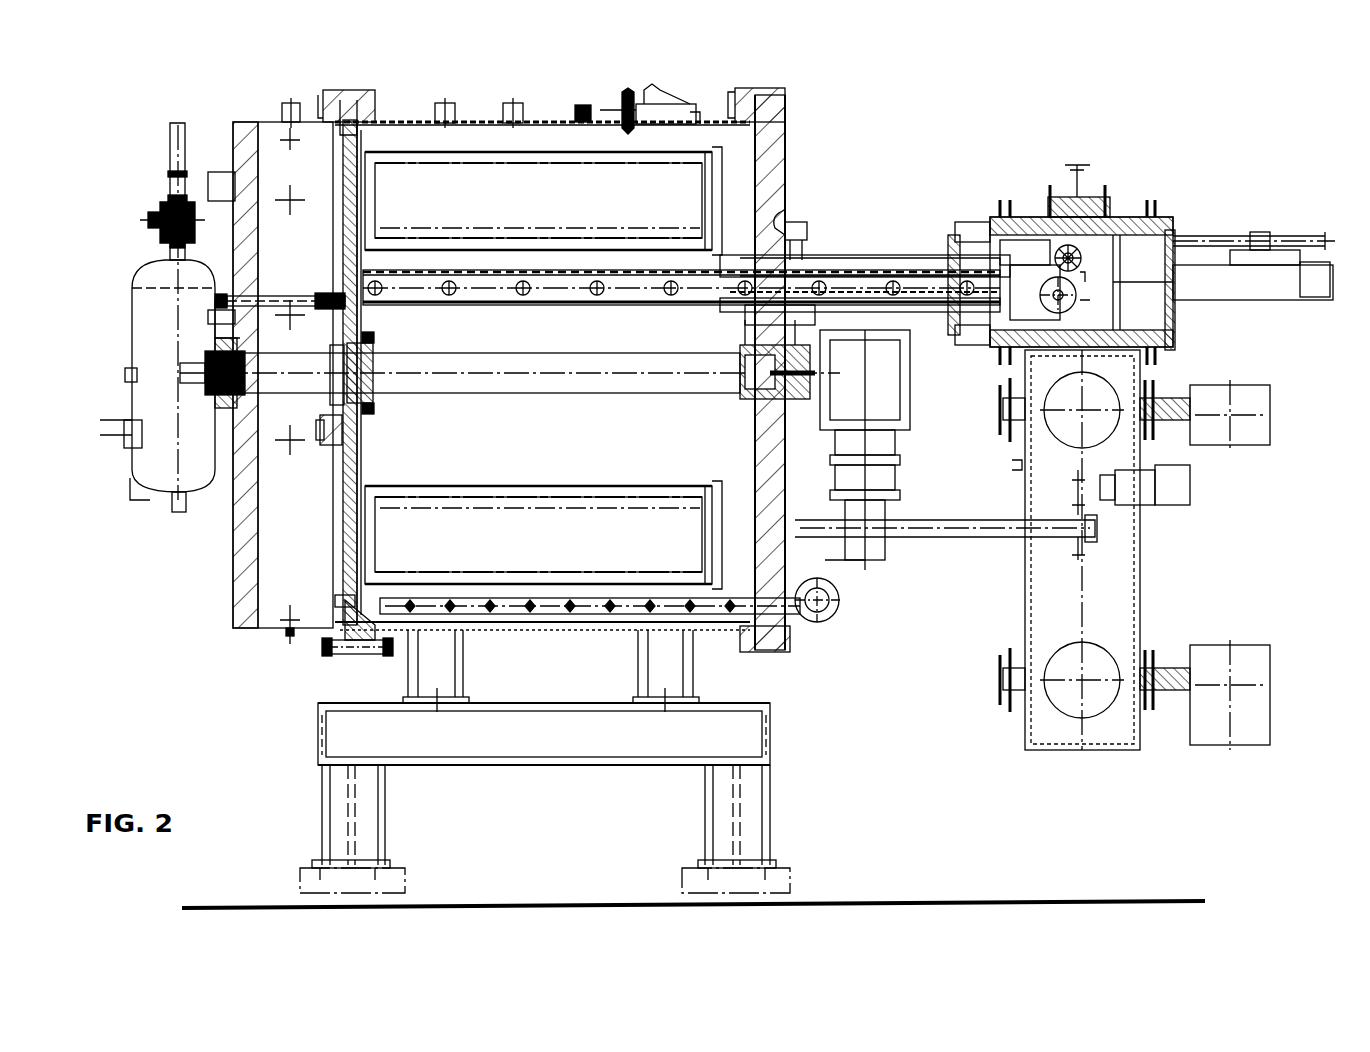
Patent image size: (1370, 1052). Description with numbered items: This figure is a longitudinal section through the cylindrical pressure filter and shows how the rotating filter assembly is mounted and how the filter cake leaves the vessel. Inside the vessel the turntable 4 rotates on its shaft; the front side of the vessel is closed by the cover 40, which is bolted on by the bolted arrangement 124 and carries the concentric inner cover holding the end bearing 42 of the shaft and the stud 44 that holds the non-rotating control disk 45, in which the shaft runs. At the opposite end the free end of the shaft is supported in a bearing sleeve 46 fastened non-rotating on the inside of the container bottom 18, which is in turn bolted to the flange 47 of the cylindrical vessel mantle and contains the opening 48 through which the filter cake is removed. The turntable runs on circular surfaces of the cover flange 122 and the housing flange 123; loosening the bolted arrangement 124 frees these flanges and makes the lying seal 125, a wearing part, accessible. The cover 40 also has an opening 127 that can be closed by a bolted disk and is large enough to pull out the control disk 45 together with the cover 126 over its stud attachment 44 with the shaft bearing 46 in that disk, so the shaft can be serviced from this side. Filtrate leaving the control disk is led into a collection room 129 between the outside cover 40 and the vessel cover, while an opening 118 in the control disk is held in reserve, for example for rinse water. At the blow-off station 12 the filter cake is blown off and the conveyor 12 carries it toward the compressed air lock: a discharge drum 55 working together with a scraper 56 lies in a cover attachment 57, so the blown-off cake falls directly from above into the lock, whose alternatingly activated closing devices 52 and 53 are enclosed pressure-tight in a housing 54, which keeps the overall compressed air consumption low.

The turntable 4 is at (360, 320).
The blow-off station 12 is at (618, 300).
The container bottom 18 is at (773, 165).
The cover 40 is at (248, 614).
The end bearing 42 is at (262, 410).
The stud 44 is at (268, 300).
The control disk 45 is at (325, 480).
The bearing sleeve 46 is at (735, 402).
The flange 47 is at (745, 95).
The opening 48 is at (783, 200).
The closing device 52 is at (1105, 400).
The closing device 53 is at (1105, 665).
The housing 54 is at (918, 245).
The discharge drum 55 is at (1162, 318).
The scraper 56 is at (1105, 200).
The cover attachment 57 is at (1183, 208).
The opening 118 is at (392, 405).
The cover flange 122 is at (330, 655).
The housing flange 123 is at (400, 630).
The bolted arrangement 124 is at (368, 650).
The lying seal 125 is at (370, 122).
The cover 126 is at (228, 480).
The opening 127 is at (215, 325).
The collection room 129 is at (278, 632).